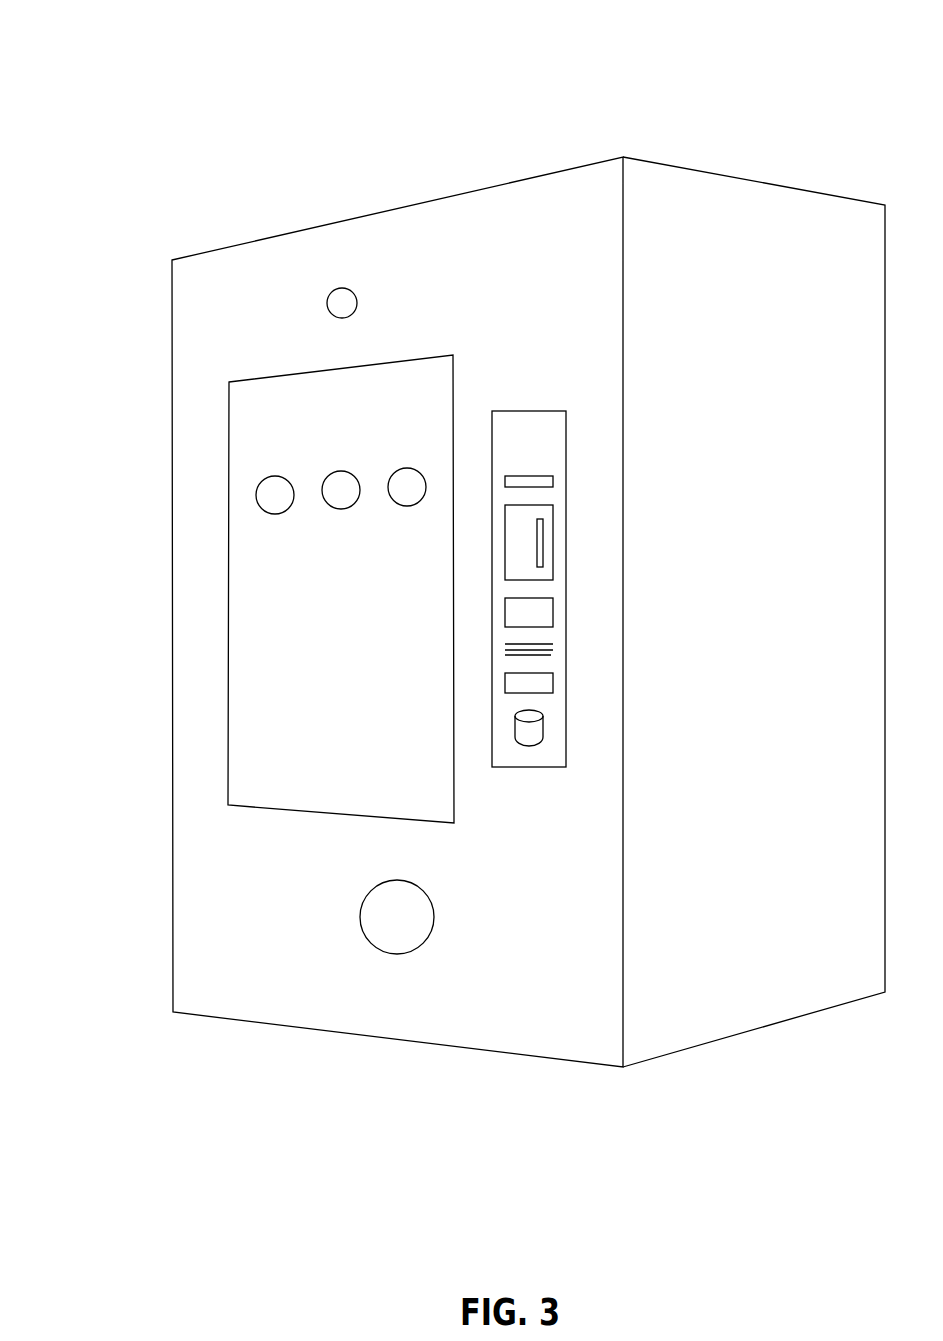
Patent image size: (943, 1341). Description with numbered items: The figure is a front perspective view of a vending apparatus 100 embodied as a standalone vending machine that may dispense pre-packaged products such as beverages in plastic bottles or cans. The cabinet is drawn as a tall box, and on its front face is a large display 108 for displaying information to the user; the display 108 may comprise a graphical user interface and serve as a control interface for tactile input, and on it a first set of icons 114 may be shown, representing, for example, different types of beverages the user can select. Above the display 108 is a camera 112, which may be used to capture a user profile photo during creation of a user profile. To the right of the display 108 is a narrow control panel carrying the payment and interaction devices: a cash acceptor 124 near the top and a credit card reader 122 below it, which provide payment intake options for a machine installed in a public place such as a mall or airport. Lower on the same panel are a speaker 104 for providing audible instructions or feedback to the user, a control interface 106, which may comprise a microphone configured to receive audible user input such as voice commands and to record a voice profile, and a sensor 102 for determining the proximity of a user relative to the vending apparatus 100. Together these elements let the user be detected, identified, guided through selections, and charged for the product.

The vending apparatus 100 is at (770, 57).
The sensor 102 is at (543, 684).
The speaker 104 is at (543, 612).
The control interface 106 is at (543, 645).
The display 108 is at (435, 375).
The camera 112 is at (341, 300).
The first set of icons 114 is at (341, 490).
The credit card reader 122 is at (540, 512).
The cash acceptor 124 is at (540, 482).